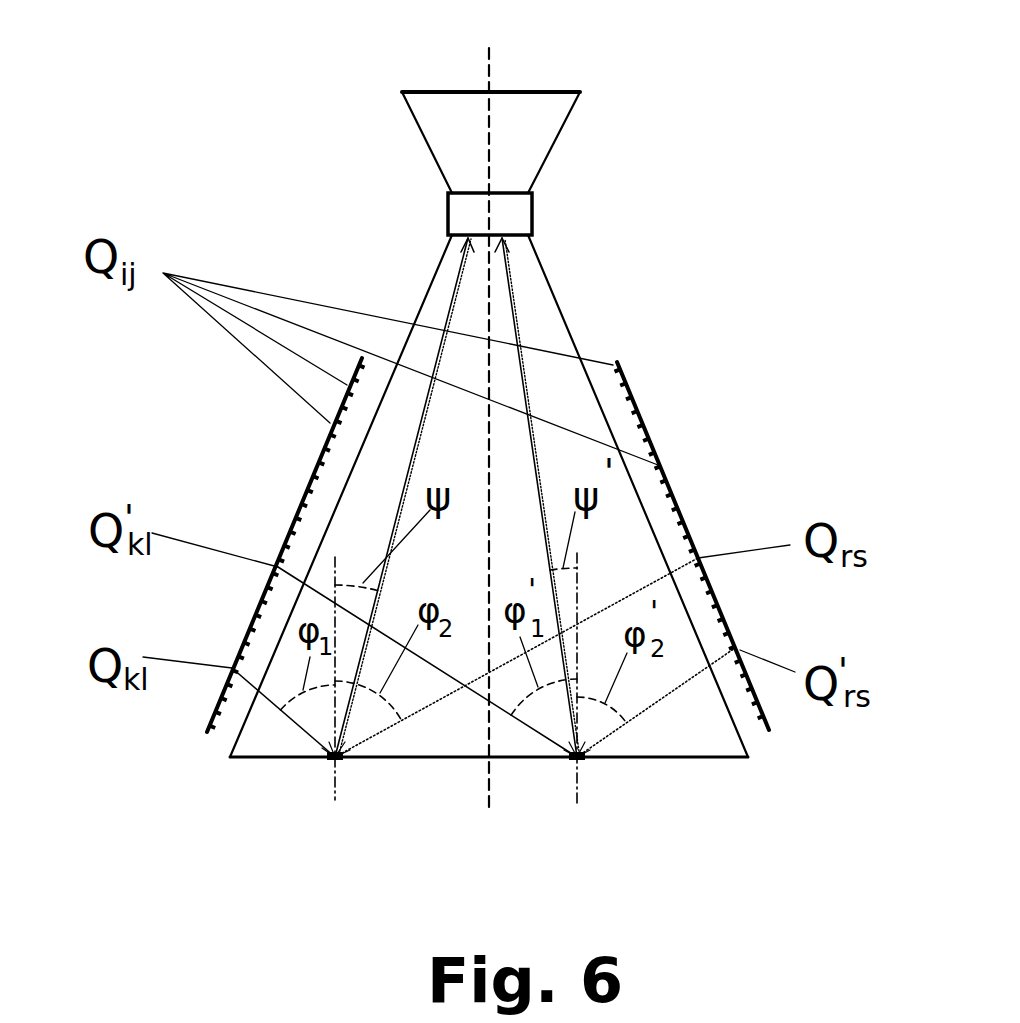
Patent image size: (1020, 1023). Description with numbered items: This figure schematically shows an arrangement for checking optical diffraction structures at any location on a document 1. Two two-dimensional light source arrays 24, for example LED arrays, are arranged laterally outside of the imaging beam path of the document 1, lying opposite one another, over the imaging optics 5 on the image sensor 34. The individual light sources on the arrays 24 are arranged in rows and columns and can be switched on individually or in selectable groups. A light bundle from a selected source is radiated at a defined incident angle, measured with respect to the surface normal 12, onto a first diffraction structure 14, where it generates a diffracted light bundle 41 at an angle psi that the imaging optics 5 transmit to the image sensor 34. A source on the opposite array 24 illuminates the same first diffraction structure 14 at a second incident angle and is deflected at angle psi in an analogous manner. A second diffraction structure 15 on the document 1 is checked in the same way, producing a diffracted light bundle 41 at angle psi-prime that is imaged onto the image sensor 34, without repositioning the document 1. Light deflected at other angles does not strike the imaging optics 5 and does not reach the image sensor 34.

The document 1 is at (443, 757).
The imaging optics 5 is at (462, 215).
The surface normal 12 is at (485, 69).
The first diffraction structure 14 is at (322, 760).
The second diffraction structure 15 is at (590, 762).
The two-dimensional light source array 24 is at (305, 480).
The image sensor 34 is at (550, 92).
The diffracted light bundle 41 is at (460, 293).